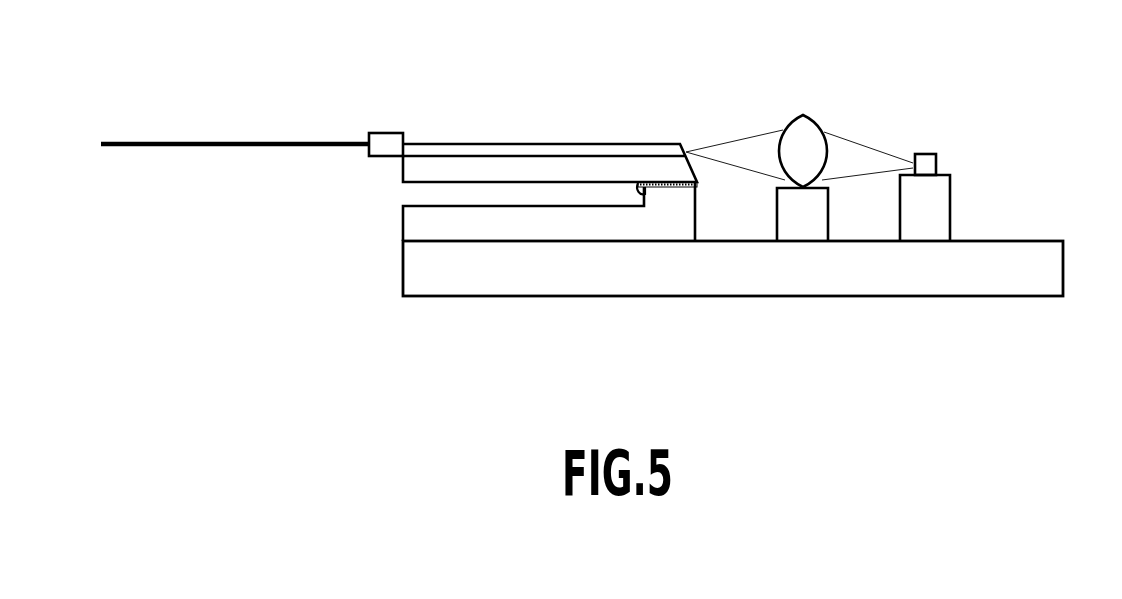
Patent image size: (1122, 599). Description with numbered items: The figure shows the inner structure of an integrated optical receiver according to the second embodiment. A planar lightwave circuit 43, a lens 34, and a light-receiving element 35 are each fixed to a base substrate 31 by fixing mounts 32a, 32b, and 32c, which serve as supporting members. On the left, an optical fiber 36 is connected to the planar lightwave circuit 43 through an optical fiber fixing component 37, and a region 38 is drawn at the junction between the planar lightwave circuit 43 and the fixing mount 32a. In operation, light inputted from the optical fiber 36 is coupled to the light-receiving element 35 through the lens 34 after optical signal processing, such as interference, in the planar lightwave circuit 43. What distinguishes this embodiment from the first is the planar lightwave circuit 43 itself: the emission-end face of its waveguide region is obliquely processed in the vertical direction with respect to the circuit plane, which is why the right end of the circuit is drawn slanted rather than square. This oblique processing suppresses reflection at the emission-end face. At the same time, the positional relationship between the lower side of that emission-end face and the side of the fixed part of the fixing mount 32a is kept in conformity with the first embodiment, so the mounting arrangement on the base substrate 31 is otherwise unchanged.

The base substrate 31 is at (1013, 247).
The fixing mount 32a is at (403, 222).
The fixing mount 32b is at (805, 215).
The fixing mount 32c is at (935, 215).
The lens 34 is at (814, 119).
The light-receiving element 35 is at (926, 153).
The optical fiber 36 is at (244, 140).
The optical fiber fixing component 37 is at (391, 130).
The adhesive layer 38 is at (697, 185).
The planar lightwave circuit 43 is at (547, 187).